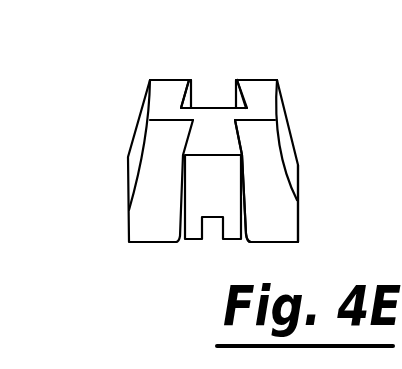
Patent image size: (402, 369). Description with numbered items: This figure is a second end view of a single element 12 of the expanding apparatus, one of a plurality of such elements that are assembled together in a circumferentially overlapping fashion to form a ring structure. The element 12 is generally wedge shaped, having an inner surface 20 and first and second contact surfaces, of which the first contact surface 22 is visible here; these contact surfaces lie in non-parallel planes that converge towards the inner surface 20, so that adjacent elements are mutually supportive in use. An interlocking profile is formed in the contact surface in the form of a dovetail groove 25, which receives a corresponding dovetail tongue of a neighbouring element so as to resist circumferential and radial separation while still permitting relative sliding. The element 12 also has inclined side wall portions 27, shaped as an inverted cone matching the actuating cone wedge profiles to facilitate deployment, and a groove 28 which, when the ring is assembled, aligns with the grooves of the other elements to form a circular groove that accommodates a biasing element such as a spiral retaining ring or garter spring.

The element 12 is at (115, 128).
The inner surface 20 is at (167, 93).
The first contact surface 22 is at (267, 208).
The dovetail groove 25 is at (207, 98).
The inclined side wall portion 27 is at (292, 157).
The groove 28 is at (212, 232).